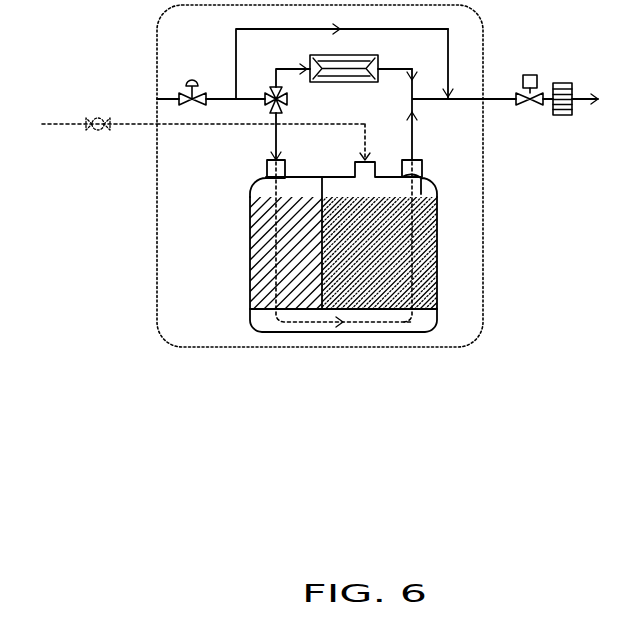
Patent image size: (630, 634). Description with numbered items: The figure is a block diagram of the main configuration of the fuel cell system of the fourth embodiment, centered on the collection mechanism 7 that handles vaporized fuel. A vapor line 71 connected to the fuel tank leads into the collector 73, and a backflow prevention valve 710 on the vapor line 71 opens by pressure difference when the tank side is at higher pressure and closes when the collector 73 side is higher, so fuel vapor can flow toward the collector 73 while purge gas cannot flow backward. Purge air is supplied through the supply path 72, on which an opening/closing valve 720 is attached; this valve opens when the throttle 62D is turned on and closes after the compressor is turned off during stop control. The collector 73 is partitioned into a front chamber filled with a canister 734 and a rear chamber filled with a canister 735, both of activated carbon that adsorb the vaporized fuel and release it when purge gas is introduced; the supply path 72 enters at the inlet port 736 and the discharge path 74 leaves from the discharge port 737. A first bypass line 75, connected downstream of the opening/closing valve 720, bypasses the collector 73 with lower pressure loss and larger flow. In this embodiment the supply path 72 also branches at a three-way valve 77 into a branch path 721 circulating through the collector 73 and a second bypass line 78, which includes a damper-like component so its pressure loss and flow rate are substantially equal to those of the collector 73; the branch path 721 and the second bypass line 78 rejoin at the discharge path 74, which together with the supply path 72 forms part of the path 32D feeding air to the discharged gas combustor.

The collection mechanism 7 is at (483, 204).
The vapor line 71 is at (55, 124).
The backflow prevention valve 710 is at (97, 132).
The supply path 72 is at (222, 97).
The opening/closing valve 720 is at (191, 80).
The collector 73 is at (437, 262).
The canister 734 is at (265, 252).
The canister 735 is at (423, 233).
The inlet port 736 is at (265, 170).
The discharge port 737 is at (422, 165).
The discharge path 74 is at (467, 97).
The first bypass line 75 is at (253, 30).
The three-way valve 77 is at (283, 97).
The second bypass line 78 is at (352, 83).
The branch path 721 is at (275, 138).
The throttle 62D is at (533, 75).
The path 32D is at (580, 100).